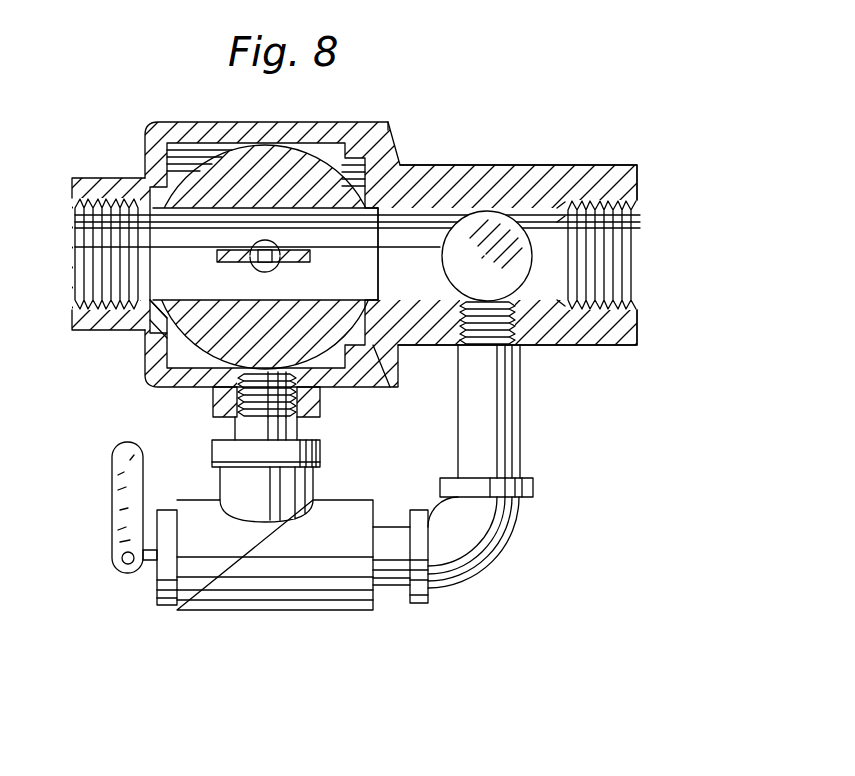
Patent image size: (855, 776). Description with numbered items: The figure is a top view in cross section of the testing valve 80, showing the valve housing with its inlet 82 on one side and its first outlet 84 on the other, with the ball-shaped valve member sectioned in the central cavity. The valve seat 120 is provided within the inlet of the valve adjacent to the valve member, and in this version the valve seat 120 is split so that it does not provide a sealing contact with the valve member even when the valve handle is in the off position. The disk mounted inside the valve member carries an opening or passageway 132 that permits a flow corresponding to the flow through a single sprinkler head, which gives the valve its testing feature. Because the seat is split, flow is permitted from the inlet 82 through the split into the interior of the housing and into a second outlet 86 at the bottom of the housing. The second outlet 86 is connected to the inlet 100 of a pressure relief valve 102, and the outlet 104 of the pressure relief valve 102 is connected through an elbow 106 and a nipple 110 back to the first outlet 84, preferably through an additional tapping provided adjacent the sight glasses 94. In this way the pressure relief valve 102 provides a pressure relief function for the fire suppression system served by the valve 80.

The valve 80 is at (388, 130).
The inlet 82 is at (94, 190).
The first outlet 84 is at (600, 170).
The second outlet 86 is at (322, 398).
The sight glasses 94 is at (507, 253).
The inlet of pressure relief valve 100 is at (320, 452).
The pressure relief valve 102 is at (247, 611).
The outlet of pressure relief valve 104 is at (375, 507).
The elbow 106 is at (503, 557).
The nipple 110 is at (503, 410).
The valve seat 120 is at (160, 298).
The opening or passageway 132 is at (275, 250).